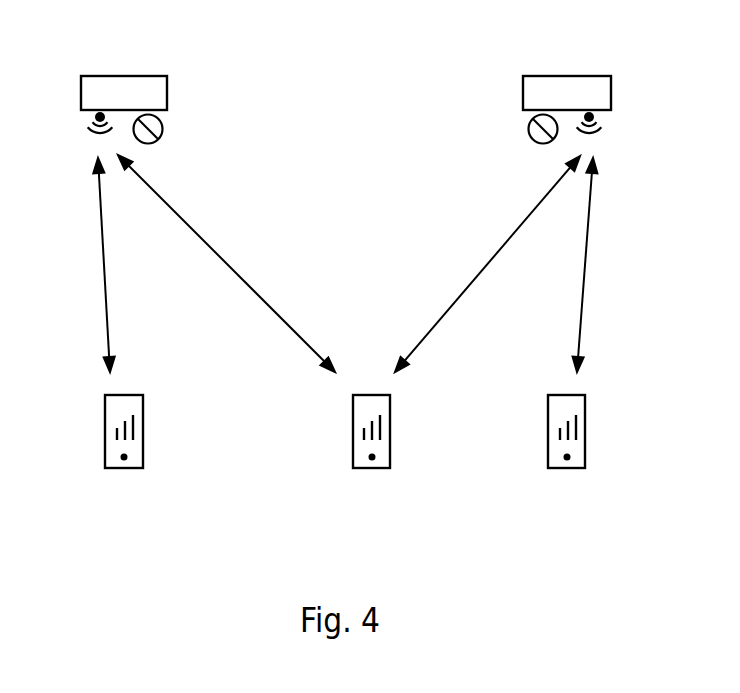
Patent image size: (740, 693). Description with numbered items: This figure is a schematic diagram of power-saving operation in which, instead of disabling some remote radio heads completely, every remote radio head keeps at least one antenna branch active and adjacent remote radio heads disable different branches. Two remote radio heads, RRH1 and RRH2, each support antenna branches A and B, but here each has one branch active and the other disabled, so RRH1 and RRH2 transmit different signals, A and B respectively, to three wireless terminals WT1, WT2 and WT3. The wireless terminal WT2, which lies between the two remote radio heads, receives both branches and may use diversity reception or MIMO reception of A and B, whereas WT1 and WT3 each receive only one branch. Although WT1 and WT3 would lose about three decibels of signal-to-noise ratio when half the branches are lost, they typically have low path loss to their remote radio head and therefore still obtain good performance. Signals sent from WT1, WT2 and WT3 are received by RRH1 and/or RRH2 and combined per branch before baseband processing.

The remote radio head RRH1 is at (567, 94).
The remote radio head RRH2 is at (124, 94).
The wireless terminal WT1 is at (127, 476).
The wireless terminal WT2 is at (371, 476).
The wireless terminal WT3 is at (573, 476).